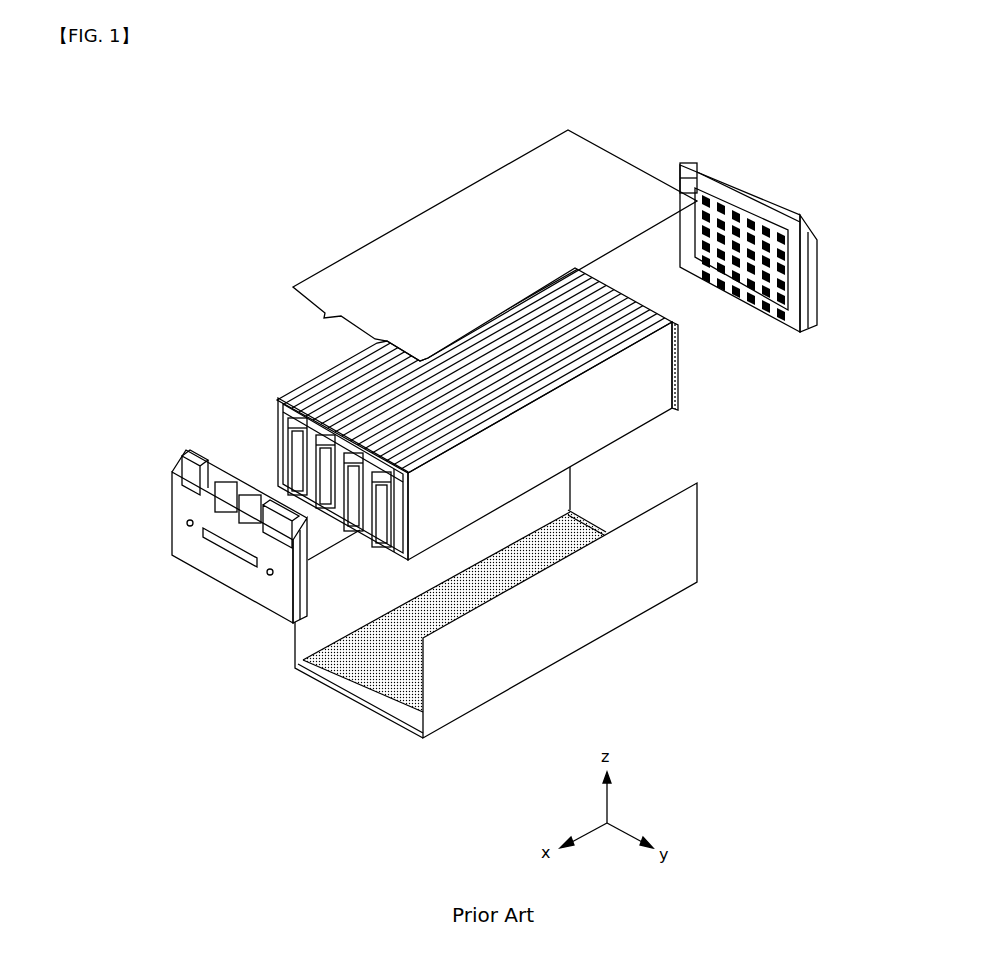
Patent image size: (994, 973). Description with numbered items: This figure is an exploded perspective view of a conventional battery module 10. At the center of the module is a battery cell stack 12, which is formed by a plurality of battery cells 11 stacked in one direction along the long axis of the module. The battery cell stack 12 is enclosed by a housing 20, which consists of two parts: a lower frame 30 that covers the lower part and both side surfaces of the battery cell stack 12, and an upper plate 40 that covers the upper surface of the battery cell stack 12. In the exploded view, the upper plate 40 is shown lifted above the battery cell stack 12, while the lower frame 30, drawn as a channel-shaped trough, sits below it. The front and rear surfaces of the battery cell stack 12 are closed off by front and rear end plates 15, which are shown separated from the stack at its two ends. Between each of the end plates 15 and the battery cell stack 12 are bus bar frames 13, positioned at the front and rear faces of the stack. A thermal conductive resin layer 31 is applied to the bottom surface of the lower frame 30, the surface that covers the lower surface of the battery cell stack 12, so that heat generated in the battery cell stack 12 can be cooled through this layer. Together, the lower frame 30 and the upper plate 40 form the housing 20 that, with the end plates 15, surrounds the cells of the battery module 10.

The battery module 10 is at (475, 81).
The battery cells 11 is at (630, 403).
The battery cell stack 12 is at (350, 386).
The bus bar frames 13 is at (268, 440).
The front and rear end plates 15 is at (695, 165).
The housing 20 is at (387, 813).
The lower frame 30 is at (588, 618).
The thermal conductive resin layer 31 is at (387, 668).
The upper plate 40 is at (443, 228).